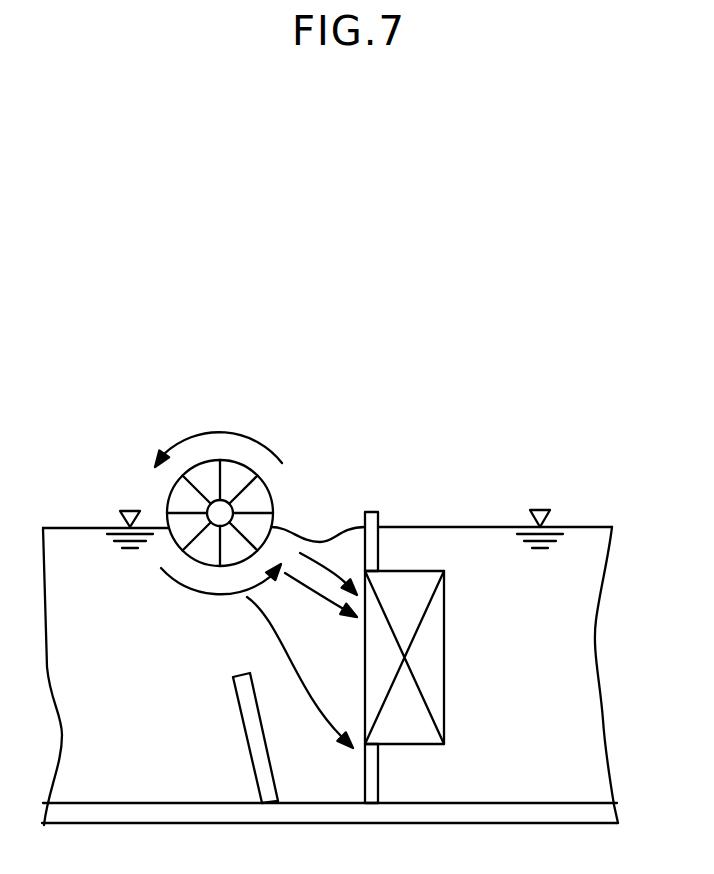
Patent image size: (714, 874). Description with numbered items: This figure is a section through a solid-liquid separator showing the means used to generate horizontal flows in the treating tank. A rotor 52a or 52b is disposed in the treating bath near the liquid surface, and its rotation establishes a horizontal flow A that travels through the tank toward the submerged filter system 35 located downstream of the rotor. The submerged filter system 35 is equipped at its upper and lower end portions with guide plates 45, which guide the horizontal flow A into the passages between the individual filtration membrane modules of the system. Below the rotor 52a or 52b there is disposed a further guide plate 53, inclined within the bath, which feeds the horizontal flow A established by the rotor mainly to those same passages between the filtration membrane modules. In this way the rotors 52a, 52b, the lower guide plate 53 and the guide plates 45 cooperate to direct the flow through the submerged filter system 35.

The rotor 52a is at (261, 472).
The rotor 52b is at (243, 476).
The guide plate 45 is at (372, 511).
The submerged filter system 35 is at (452, 673).
The guide plate 53 is at (248, 747).
The horizontal flow A is at (277, 629).